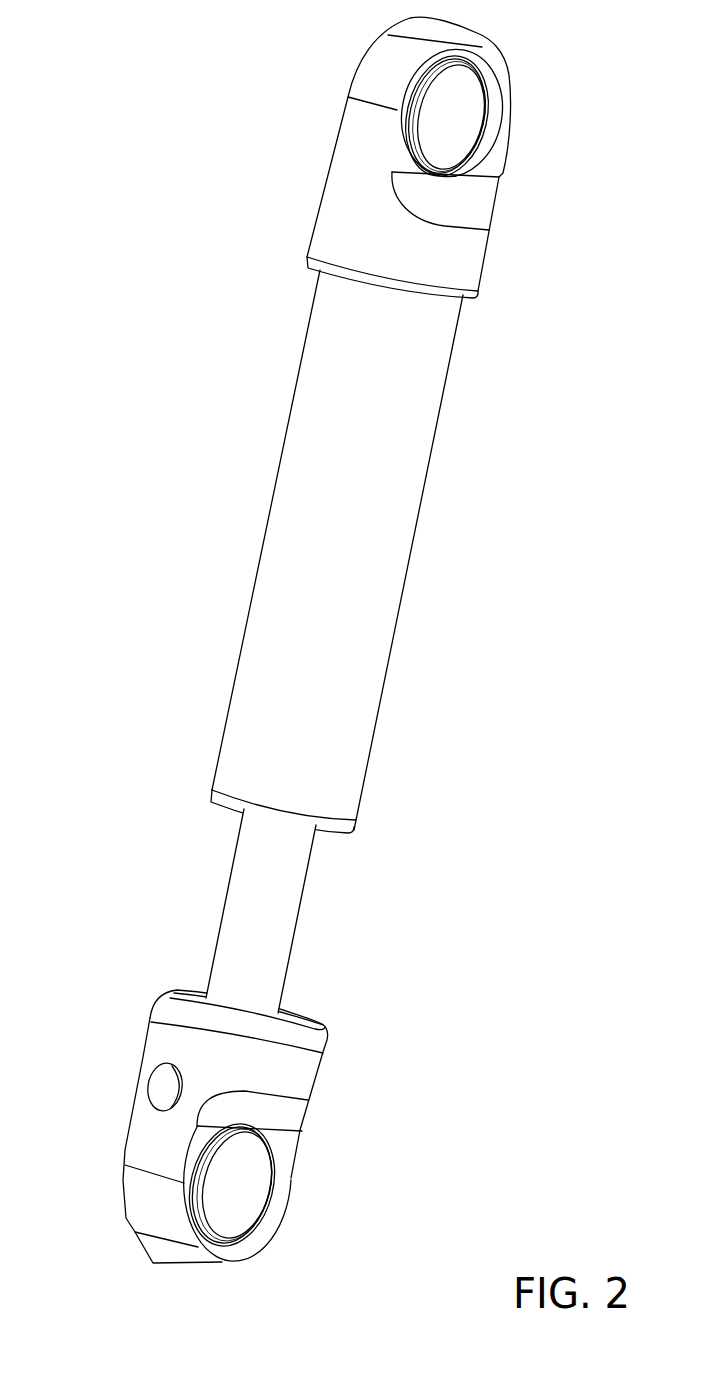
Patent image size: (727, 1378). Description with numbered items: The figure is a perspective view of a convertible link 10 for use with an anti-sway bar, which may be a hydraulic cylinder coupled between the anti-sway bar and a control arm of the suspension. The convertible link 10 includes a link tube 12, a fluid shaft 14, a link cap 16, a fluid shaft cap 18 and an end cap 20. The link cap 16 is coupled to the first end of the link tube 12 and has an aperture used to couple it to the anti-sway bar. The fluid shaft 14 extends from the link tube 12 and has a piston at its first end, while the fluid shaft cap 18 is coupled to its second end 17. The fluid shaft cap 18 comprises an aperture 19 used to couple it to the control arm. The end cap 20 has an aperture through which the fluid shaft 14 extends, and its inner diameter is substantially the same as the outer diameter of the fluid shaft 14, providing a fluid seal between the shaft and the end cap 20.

The convertible link 10 is at (140, 129).
The link tube 12 is at (390, 512).
The fluid shaft 14 is at (252, 932).
The link cap 16 is at (432, 250).
The second end 17 is at (469, 125).
The fluid shaft cap 18 is at (285, 1078).
The aperture 19 is at (252, 1206).
The end cap 20 is at (333, 827).